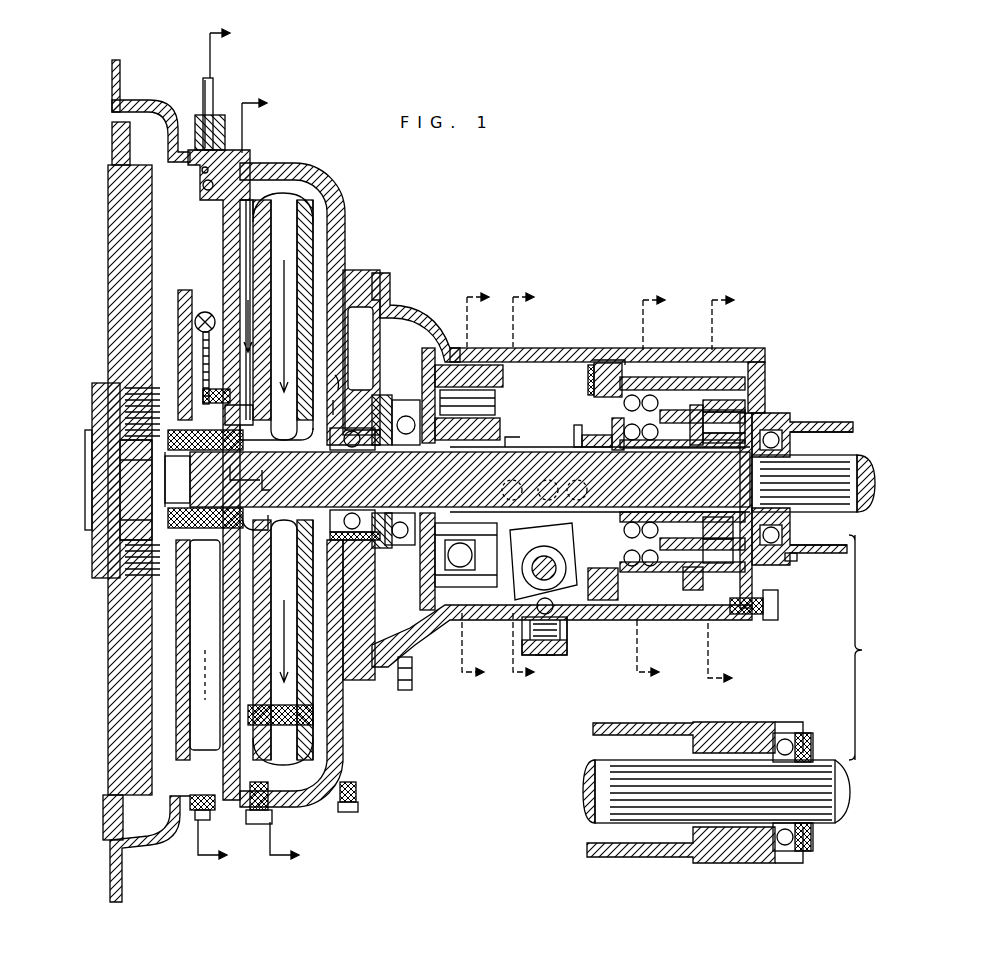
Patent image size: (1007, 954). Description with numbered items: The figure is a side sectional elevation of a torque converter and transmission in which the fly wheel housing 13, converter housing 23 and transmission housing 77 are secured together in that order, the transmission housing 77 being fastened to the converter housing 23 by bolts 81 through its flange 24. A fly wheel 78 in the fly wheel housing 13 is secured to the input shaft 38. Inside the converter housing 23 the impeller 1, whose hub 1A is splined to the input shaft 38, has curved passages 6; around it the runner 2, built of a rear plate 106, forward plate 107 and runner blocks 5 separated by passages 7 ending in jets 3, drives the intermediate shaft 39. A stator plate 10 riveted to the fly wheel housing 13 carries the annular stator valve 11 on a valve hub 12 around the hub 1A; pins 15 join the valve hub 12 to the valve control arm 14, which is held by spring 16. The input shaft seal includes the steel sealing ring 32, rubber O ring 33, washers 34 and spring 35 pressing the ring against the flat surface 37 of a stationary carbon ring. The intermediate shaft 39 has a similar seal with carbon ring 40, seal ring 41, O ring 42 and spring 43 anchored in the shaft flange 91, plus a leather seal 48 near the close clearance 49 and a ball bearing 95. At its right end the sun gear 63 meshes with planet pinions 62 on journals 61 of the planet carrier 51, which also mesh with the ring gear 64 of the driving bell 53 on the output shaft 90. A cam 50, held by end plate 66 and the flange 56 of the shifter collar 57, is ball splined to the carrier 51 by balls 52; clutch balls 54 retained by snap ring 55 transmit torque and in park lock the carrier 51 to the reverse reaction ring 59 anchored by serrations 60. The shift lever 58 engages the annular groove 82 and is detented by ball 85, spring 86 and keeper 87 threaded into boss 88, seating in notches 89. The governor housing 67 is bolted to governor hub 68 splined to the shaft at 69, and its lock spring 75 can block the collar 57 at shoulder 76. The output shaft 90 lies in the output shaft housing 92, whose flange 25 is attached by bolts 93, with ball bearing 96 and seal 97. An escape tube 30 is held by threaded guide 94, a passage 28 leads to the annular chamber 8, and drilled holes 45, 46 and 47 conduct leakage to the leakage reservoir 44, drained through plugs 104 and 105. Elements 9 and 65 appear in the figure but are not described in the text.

The impeller 1 is at (303, 282).
The impeller hub 1A is at (254, 524).
The runner 2 is at (318, 198).
The orifice or jet 3 is at (263, 102).
The runner blocks 5 is at (266, 745).
The passages 6 is at (282, 366).
The passages 7 is at (651, 489).
The annular chamber 8 is at (731, 706).
The release sleeve strip 9 is at (250, 248).
The stator plate 10 is at (237, 733).
The stator valve 11 is at (242, 420).
The valve hub 12 is at (240, 430).
The fly wheel housing 13 is at (122, 104).
The valve control arm 14 is at (205, 350).
The pins 15 is at (211, 405).
The spring 16 is at (205, 311).
The converter housing 23 is at (290, 165).
The flange 24 is at (390, 280).
The flange 25 is at (766, 368).
The passage 28 is at (215, 188).
The escape tube 30 is at (203, 92).
The steel sealing ring 32 is at (177, 479).
The rubber O ring 33 is at (457, 479).
The washers 34 is at (234, 483).
The spring 35 is at (249, 485).
The flat surface 37 is at (205, 479).
The input shaft 38 is at (150, 462).
The intermediate shaft 39 is at (527, 460).
The carbon ring 40 is at (368, 512).
The seal ring 41 is at (352, 500).
The rubber O ring 42 is at (352, 448).
The spring 43 is at (333, 400).
The leakage reservoir 44 is at (215, 647).
The drilled hole 45 is at (190, 590).
The drilled hole 46 is at (428, 572).
The drilled hole 47 is at (425, 590).
The leather seal 48 is at (376, 440).
The close clearance 49 is at (423, 600).
The cam 50 is at (690, 400).
The planet carrier 51 is at (675, 448).
The balls 52 is at (638, 445).
The driving bell 53 is at (652, 393).
The clutch balls 54 is at (632, 393).
The snap ring 55 is at (652, 425).
The flange 56 is at (620, 430).
The shifter collar 57 is at (574, 425).
The shift lever 58 is at (543, 545).
The reverse reaction ring 59 is at (608, 363).
The serrations 60 is at (597, 360).
The journals 61 is at (772, 422).
The planet pinions 62 is at (765, 430).
The sun gear 63 is at (705, 524).
The ring gear 64 is at (708, 548).
The shim 65 is at (588, 378).
The end plate 66 is at (690, 582).
The governor housing 67 is at (500, 378).
The governor hub 68 is at (422, 353).
The spline 69 is at (445, 490).
The lock spring 75 is at (455, 432).
The shoulder 76 is at (508, 445).
The transmission housing 77 is at (545, 355).
The fly wheel 78 is at (146, 236).
The bolts 81 is at (412, 690).
The annular groove 82 is at (584, 436).
The ball 85 is at (523, 625).
The spring 86 is at (565, 655).
The keeper 87 is at (545, 655).
The boss 88 is at (568, 630).
The notches 89 is at (538, 603).
The output shaft 90 is at (865, 462).
The shaft flange 91 is at (335, 375).
The output shaft housing 92 is at (820, 555).
The bolts 93 is at (780, 607).
The screw-threaded guide 94 is at (196, 118).
The ball bearing 95 is at (398, 405).
The ball bearing 96 is at (782, 562).
The seal 97 is at (805, 733).
The plug 104 is at (208, 812).
The plug 105 is at (355, 800).
The rear plate 106 is at (330, 224).
The forward plate 107 is at (248, 215).